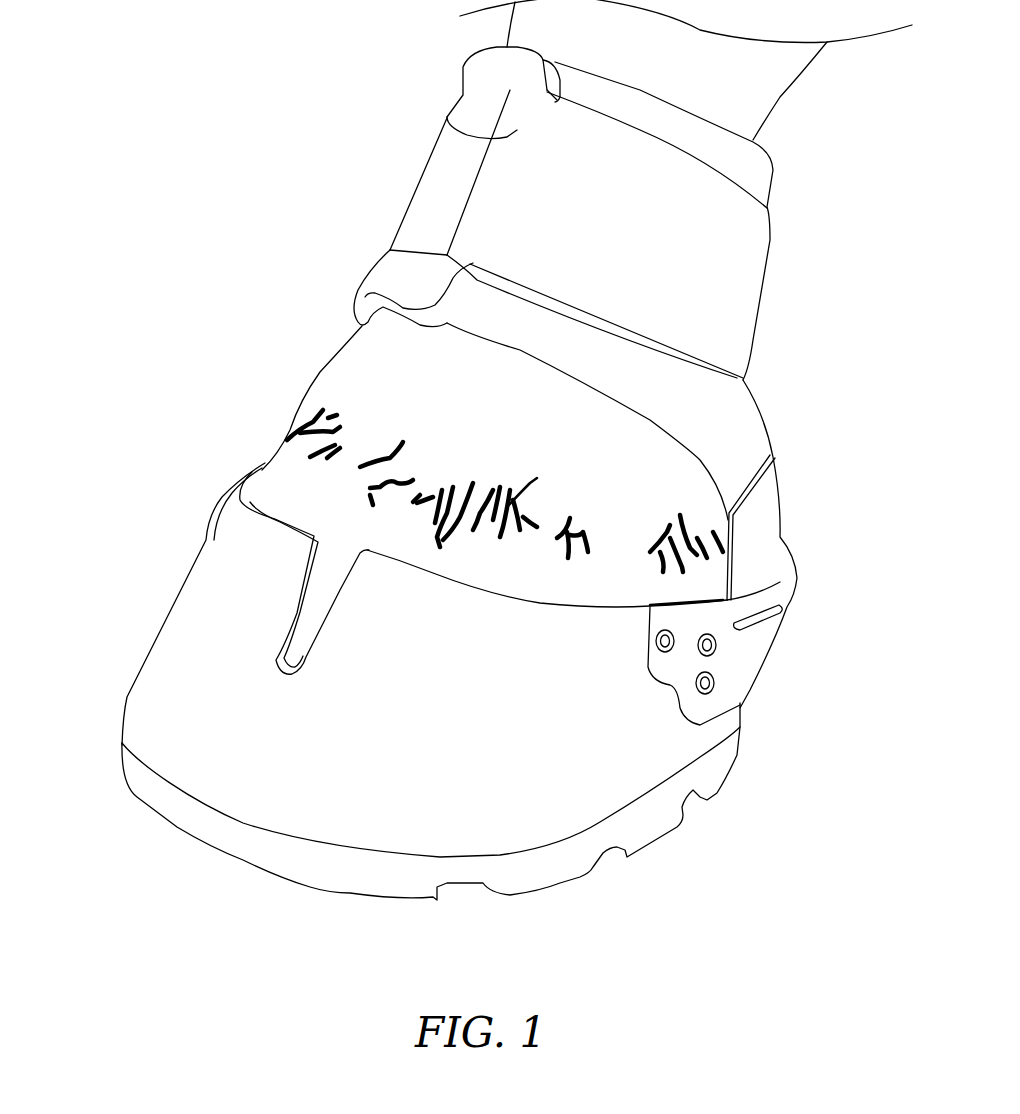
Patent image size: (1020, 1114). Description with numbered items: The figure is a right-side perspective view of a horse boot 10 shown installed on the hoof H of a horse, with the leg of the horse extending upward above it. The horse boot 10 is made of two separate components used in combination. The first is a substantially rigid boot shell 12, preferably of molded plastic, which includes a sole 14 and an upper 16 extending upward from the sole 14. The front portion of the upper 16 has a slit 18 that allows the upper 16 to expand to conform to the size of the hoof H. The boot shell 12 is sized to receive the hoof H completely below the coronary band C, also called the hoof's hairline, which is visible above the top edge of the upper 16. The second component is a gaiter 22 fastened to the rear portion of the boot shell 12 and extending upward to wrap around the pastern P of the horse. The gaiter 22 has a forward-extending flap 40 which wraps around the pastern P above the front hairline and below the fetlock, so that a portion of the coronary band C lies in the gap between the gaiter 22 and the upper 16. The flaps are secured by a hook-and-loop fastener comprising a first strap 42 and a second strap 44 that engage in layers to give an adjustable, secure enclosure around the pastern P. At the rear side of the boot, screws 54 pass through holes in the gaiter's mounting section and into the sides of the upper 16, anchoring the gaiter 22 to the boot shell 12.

The horse boot 10 is at (161, 454).
The boot shell 12 is at (416, 605).
The sole 14 is at (297, 855).
The upper 16 is at (500, 725).
The slit 18 is at (317, 607).
The gaiter 22 is at (765, 422).
The flap 40 is at (730, 408).
The first strap 42 is at (442, 172).
The second strap 44 is at (447, 117).
The screws 54 is at (742, 705).
The pastern P is at (760, 100).
The hoof H is at (280, 472).
The coronary band C is at (515, 487).